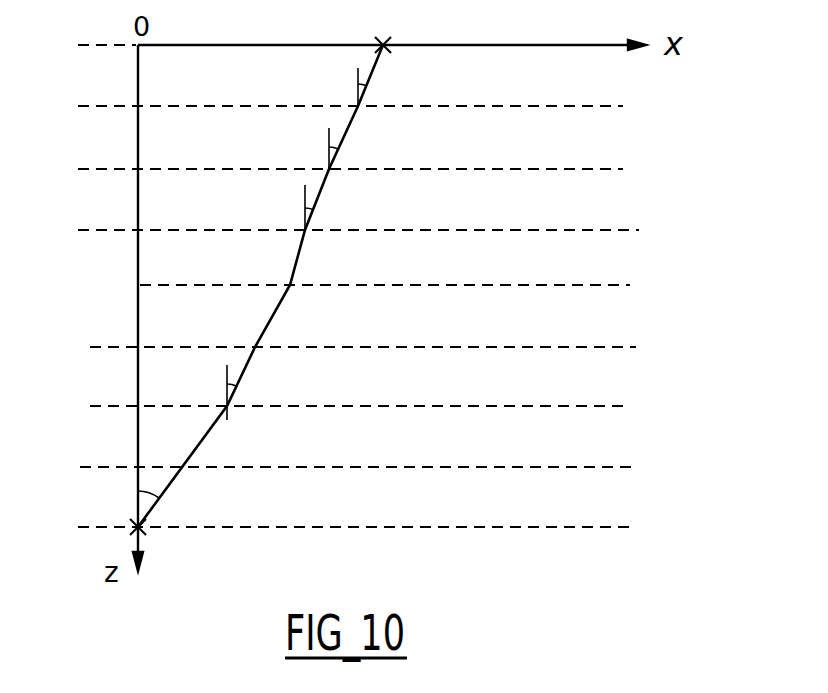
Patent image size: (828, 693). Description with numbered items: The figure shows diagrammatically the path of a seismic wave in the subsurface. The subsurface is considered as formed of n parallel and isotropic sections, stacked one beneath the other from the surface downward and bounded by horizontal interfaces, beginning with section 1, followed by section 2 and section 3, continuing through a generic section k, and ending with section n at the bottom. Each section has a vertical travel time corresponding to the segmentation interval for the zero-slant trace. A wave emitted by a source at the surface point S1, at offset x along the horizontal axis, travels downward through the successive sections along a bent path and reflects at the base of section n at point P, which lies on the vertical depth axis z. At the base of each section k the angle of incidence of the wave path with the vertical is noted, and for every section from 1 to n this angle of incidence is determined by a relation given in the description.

The section 1 is at (78, 47).
The section 2 is at (78, 109).
The section 3 is at (78, 172).
The section k is at (78, 347).
The section n is at (78, 467).
The surface point S1 at abscissa x1 S1 is at (414, 28).
The point P at depth P is at (150, 539).